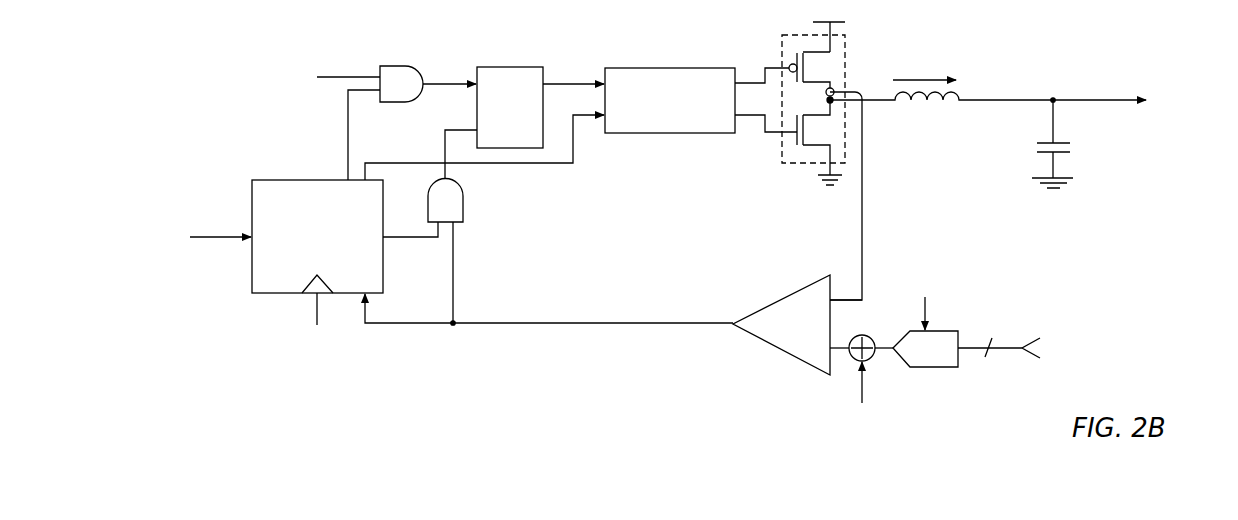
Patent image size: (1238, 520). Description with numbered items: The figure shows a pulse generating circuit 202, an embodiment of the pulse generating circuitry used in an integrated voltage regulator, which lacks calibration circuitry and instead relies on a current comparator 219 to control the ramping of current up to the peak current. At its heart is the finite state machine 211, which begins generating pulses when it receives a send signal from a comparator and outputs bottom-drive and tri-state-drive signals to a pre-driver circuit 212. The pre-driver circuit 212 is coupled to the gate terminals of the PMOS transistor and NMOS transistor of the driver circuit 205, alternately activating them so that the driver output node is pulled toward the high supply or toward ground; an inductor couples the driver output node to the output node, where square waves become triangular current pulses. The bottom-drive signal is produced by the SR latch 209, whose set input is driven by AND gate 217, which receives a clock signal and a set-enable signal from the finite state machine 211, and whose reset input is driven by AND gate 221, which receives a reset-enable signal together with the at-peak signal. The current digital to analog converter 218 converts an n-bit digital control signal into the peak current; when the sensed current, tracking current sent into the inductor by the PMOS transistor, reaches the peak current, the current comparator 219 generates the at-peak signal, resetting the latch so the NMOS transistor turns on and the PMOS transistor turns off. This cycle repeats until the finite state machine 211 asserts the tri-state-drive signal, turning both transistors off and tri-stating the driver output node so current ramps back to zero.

The pulse generating circuit 202 is at (187, 373).
The driver circuit 205 is at (845, 42).
The SR latch 209 is at (492, 65).
The finite state machine 211 is at (317, 236).
The pre-driver circuit 212 is at (670, 100).
The AND gate 217 is at (397, 65).
The IDAC 218 is at (958, 367).
The current comparator 219 is at (780, 310).
The AND gate 221 is at (463, 205).